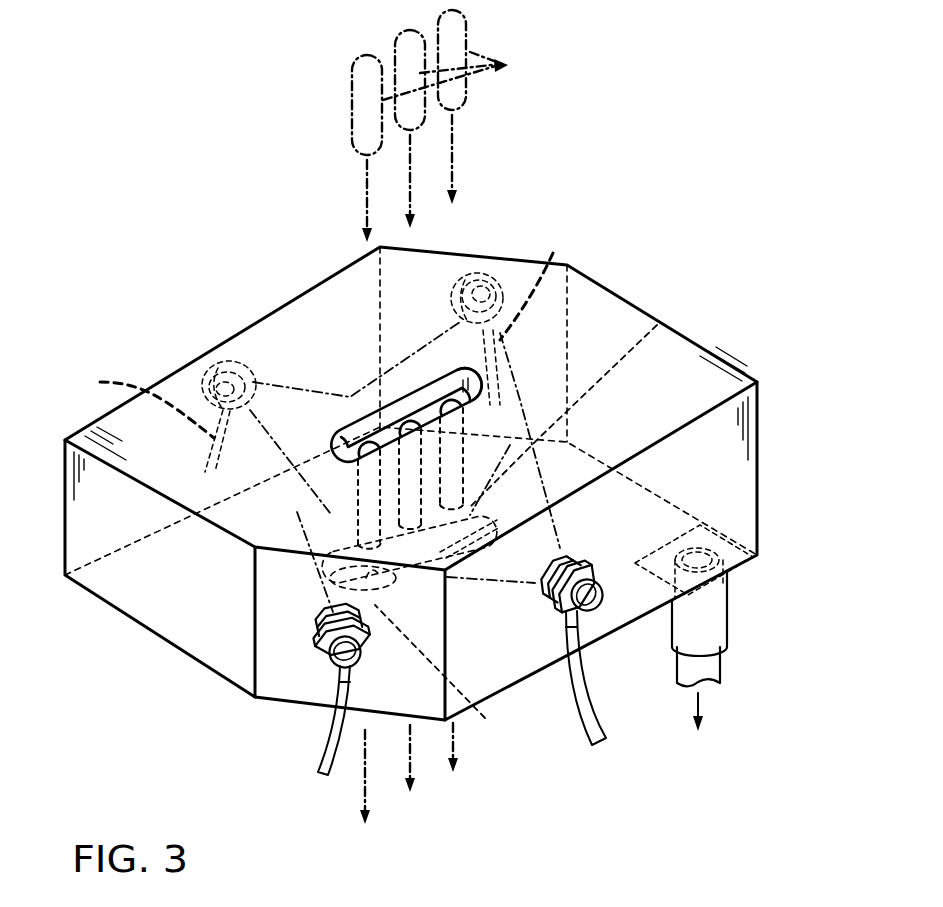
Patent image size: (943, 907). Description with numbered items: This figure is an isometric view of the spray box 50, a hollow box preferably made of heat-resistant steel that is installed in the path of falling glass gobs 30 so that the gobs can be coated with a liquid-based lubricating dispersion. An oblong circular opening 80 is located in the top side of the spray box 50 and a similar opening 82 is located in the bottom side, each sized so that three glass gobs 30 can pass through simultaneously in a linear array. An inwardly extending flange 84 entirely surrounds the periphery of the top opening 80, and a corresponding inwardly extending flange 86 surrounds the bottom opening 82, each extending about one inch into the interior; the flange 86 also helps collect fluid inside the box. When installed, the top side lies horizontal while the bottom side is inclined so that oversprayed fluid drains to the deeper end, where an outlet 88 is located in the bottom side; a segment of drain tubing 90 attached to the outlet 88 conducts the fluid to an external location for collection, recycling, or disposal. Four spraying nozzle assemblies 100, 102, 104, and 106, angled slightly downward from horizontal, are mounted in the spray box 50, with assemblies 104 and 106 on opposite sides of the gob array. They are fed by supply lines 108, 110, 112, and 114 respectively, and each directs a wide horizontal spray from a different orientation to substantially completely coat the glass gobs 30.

The glass gobs 30 is at (368, 433).
The spray box 50 is at (157, 637).
The opening 80 is at (343, 440).
The opening 82 is at (657, 325).
The inwardly extending flange 84 is at (472, 382).
The inwardly extending flange 86 is at (485, 718).
The outlet 88 is at (726, 607).
The drain tubing 90 is at (724, 668).
The spraying nozzle assembly 100 is at (326, 650).
The spraying nozzle assembly 102 is at (498, 292).
The spraying nozzle assembly 104 is at (605, 580).
The spraying nozzle assembly 106 is at (202, 386).
The supply line 108 is at (320, 765).
The supply line 110 is at (542, 282).
The supply line 112 is at (582, 735).
The supply line 114 is at (137, 405).